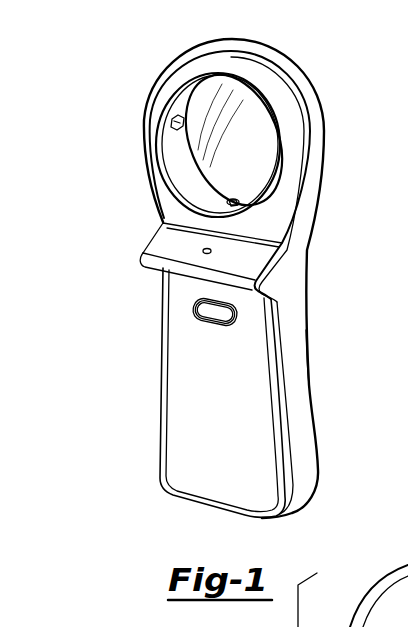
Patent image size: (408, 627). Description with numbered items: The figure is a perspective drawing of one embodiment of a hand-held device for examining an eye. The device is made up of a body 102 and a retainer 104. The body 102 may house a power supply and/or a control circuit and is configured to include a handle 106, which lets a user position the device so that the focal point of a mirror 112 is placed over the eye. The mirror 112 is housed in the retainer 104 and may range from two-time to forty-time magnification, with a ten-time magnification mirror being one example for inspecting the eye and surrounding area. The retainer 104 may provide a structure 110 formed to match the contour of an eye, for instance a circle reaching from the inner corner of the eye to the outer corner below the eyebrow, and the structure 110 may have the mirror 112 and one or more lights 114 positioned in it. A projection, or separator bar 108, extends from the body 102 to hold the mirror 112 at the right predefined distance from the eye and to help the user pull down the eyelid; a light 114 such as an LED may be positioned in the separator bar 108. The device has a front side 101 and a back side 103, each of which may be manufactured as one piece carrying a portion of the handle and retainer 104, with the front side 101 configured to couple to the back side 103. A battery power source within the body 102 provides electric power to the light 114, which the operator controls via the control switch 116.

The front side 101 is at (200, 441).
The body 102 is at (102, 210).
The back side 103 is at (310, 387).
The retainer 104 is at (102, 38).
The handle 106 is at (302, 441).
The separator bar 108 is at (258, 286).
The structure 110 is at (298, 145).
The mirror 112 is at (256, 130).
The light 114 is at (177, 118).
The control switch 116 is at (196, 310).